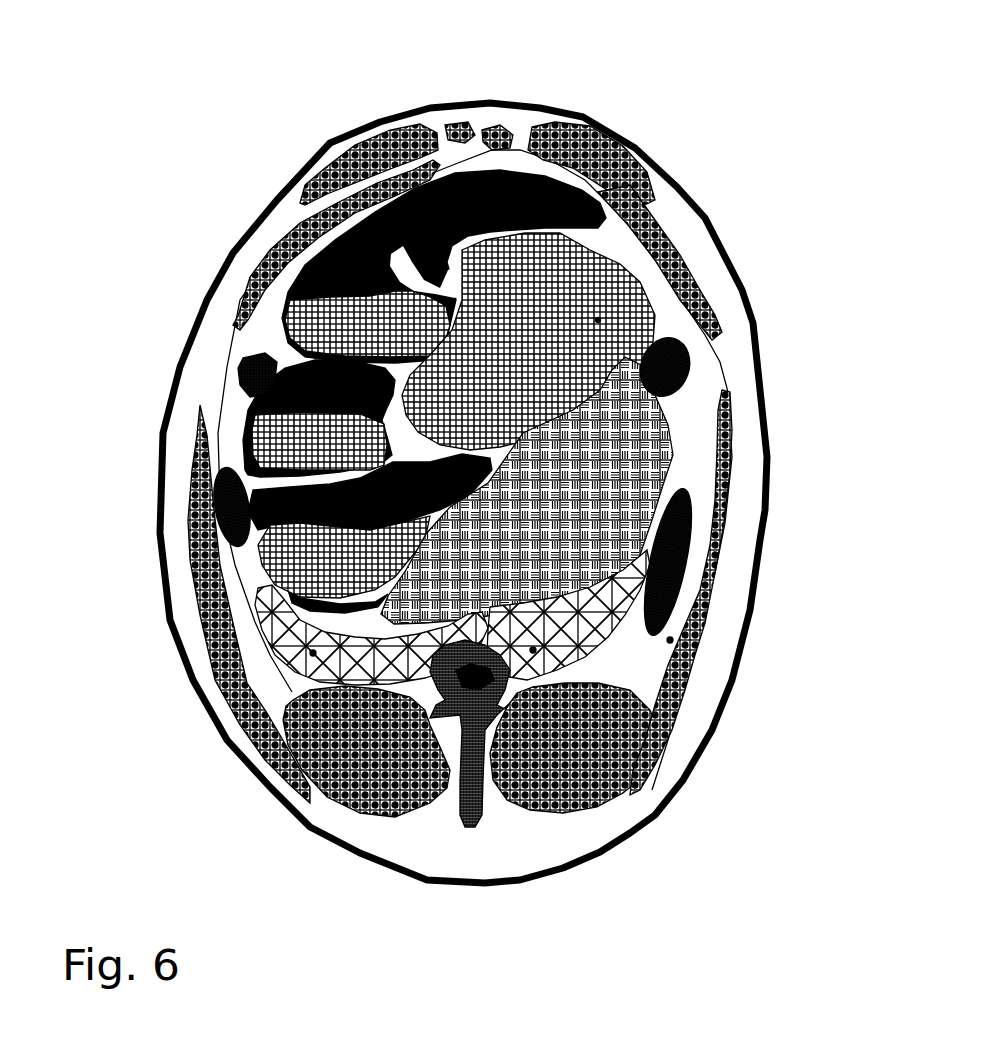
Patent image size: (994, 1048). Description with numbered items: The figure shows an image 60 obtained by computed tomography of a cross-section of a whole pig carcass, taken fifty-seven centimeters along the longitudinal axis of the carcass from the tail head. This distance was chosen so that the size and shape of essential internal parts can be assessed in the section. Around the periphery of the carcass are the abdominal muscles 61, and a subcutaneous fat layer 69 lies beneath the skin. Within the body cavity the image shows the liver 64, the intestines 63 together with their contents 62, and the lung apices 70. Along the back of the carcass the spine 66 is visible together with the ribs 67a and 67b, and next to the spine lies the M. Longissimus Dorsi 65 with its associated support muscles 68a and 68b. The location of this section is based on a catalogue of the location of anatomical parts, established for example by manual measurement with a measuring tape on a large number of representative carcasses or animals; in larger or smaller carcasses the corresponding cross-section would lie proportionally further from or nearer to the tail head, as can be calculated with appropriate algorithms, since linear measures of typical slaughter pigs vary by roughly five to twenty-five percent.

The image 60 is at (284, 89).
The abdominal muscles 61 is at (463, 449).
The contents 62 is at (668, 192).
The intestines 63 is at (345, 240).
The liver 64 is at (598, 320).
The M. Longissimus Dorsi 65 is at (496, 798).
The spine 66 is at (473, 820).
The rib 67a is at (662, 505).
The rib 67b is at (243, 380).
The support muscle 68a is at (723, 575).
The support muscle 68b is at (188, 560).
The subcutaneous fat layer 69 is at (670, 640).
The lung apices 70 is at (369, 663).